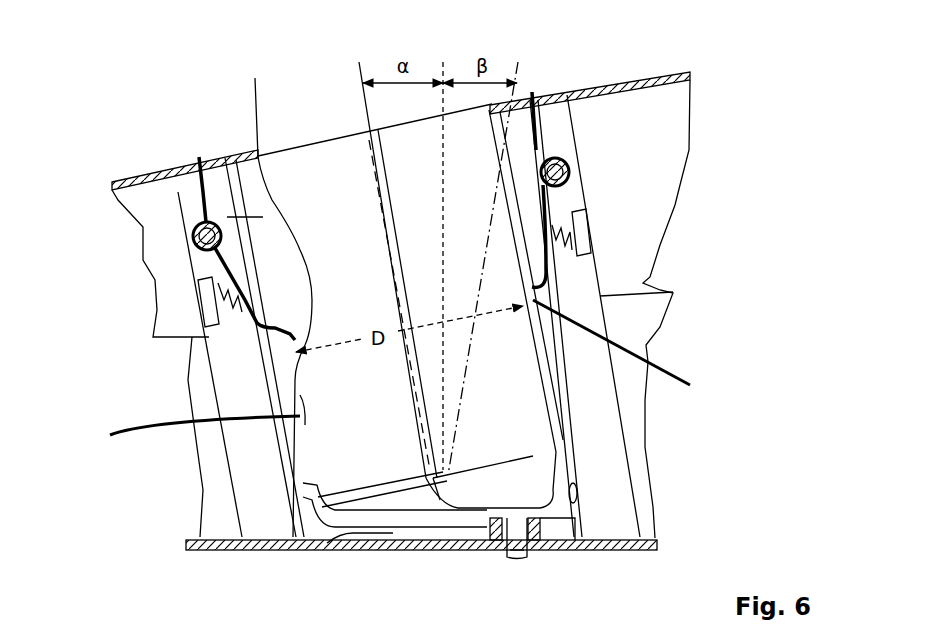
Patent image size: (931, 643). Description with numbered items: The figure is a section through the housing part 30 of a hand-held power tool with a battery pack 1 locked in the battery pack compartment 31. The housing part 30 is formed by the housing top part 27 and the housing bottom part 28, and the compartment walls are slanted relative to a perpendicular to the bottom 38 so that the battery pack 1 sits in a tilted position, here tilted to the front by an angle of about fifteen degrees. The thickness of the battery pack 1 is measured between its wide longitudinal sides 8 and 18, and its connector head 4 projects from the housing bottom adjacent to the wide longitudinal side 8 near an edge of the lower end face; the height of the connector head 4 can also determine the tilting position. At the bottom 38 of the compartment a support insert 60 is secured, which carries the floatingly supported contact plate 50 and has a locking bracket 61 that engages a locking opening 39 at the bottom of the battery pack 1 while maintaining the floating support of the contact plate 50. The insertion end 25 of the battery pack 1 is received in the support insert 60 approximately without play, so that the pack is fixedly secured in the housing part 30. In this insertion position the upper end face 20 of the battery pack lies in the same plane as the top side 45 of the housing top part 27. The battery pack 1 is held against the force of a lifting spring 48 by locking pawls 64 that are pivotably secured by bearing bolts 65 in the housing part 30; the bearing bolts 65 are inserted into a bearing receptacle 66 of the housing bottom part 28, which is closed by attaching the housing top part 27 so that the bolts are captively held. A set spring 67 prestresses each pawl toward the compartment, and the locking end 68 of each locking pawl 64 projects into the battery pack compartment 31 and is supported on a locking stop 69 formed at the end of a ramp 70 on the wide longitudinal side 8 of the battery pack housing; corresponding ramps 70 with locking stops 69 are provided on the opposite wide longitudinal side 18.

The battery pack 1 is at (293, 162).
The connector head 4 is at (540, 477).
The wide longitudinal side 8 is at (548, 413).
The wide longitudinal side 18 is at (300, 416).
The upper end face 20 is at (334, 134).
The insertion end 25 is at (307, 487).
The housing top part 27 is at (664, 101).
The housing bottom part 28 is at (638, 338).
The housing part 30 is at (142, 235).
The battery pack compartment 31 is at (327, 543).
The bottom 38 is at (425, 527).
The locking opening 39 is at (503, 548).
The top side 45 is at (594, 85).
The lifting spring 48 is at (393, 535).
The contact plate 50 is at (567, 548).
The support insert 60 is at (197, 364).
The locking bracket 61 is at (523, 552).
The locking pawl 64 is at (242, 160).
The bearing bolt 65 is at (193, 228).
The bearing receptacle 66 is at (196, 248).
The set spring 67 is at (262, 345).
The locking end 68 is at (300, 412).
The locking stop 69 is at (273, 289).
The ramp 70 is at (401, 374).